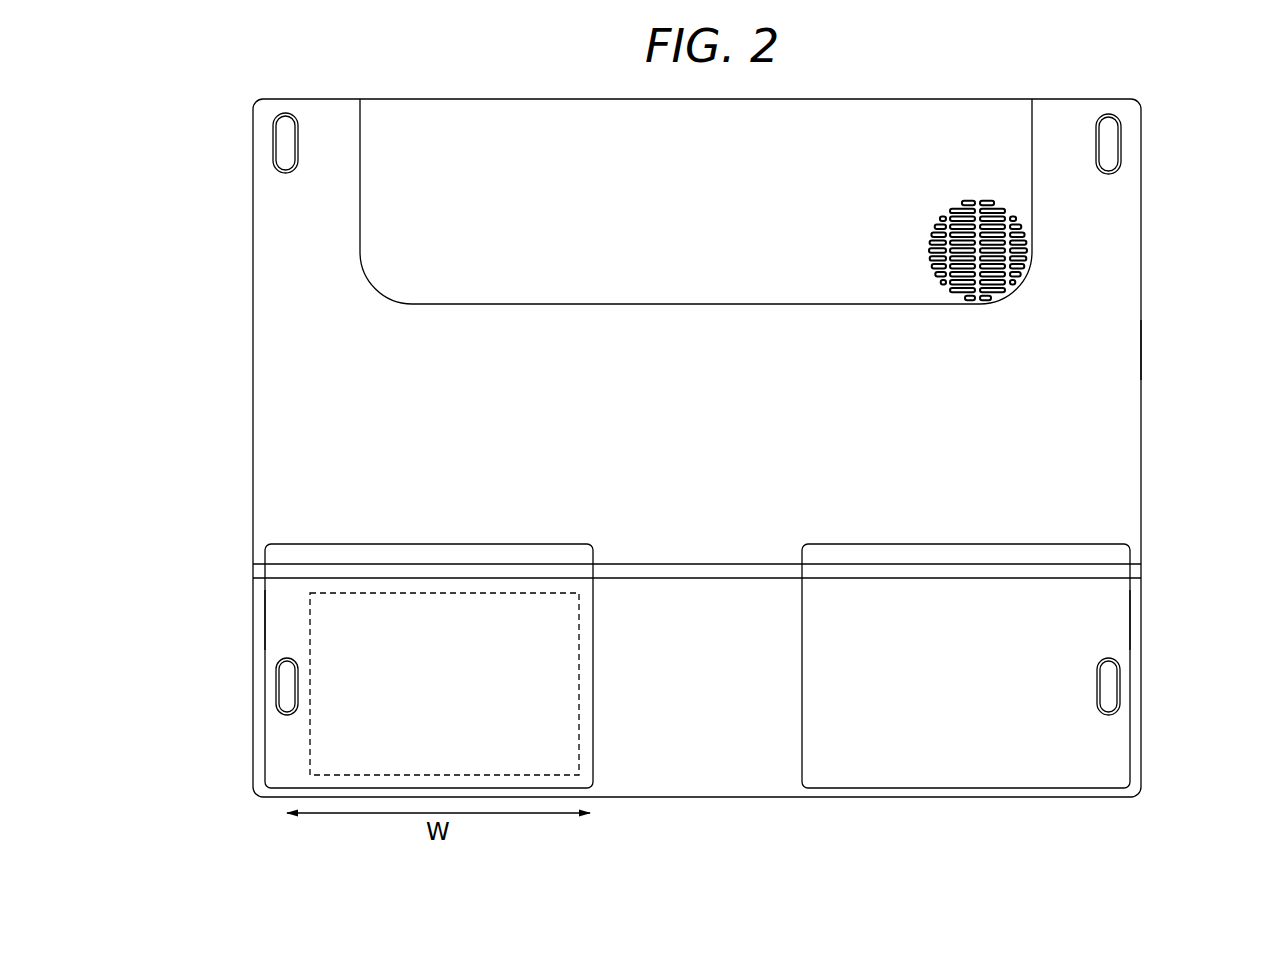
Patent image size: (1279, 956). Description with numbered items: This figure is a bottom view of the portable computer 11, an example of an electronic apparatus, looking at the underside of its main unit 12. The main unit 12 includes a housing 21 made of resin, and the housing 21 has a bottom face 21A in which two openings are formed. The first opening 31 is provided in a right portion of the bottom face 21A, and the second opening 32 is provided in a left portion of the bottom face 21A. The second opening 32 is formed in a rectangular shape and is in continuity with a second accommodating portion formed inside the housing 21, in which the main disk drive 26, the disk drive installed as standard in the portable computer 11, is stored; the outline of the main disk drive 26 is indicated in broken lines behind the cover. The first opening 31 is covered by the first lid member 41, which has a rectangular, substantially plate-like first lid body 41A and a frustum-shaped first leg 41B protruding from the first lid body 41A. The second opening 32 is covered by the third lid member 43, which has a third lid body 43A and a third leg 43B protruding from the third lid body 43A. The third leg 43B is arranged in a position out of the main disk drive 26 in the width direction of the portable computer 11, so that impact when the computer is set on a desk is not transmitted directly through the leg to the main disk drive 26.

The portable computer 11 is at (1177, 436).
The main unit 12 is at (1149, 400).
The housing 21 is at (1142, 305).
The bottom face 21A is at (1120, 349).
The main disk drive 26 is at (580, 661).
The first opening 31 is at (917, 534).
The second opening 32 is at (522, 534).
The first lid member 41 is at (1036, 601).
The first lid body 41A is at (1110, 620).
The first leg 41B is at (1110, 683).
The third lid member 43 is at (430, 619).
The third lid body 43A is at (275, 620).
The third leg 43B is at (283, 690).